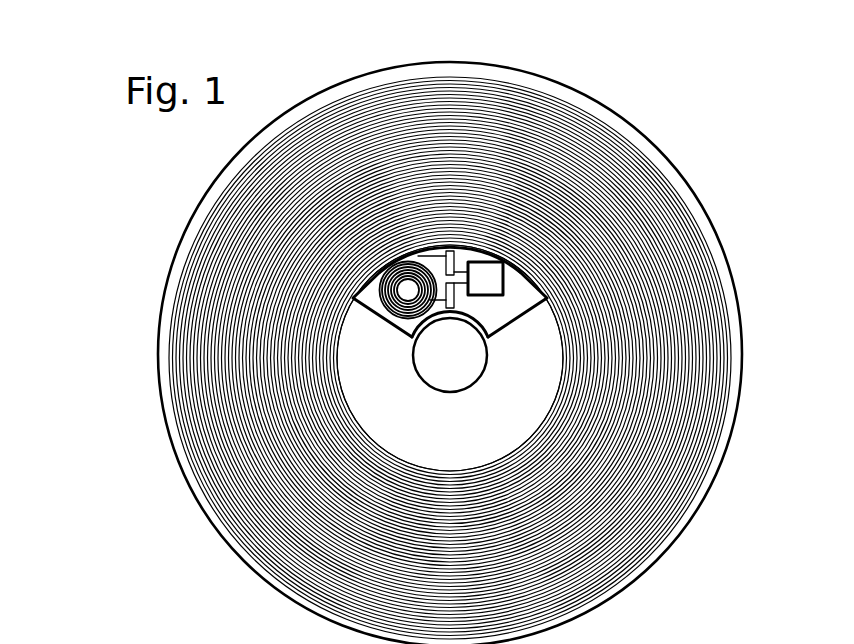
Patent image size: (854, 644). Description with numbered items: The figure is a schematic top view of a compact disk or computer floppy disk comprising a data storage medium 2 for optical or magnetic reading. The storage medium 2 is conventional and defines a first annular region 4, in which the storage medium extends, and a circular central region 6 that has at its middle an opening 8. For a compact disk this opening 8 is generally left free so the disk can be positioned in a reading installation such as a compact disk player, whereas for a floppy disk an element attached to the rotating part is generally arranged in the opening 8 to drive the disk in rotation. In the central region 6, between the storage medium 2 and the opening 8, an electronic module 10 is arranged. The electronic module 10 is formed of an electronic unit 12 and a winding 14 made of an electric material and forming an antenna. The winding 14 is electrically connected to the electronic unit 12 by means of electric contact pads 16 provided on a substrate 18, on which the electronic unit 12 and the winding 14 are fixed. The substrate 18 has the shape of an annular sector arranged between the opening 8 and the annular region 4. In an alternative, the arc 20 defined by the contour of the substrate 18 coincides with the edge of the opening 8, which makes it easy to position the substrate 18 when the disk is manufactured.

The data storage medium 2 is at (585, 225).
The first annular region 4 is at (162, 415).
The circular central region 6 is at (405, 445).
The opening 8 is at (424, 350).
The electronic module 10 is at (490, 322).
The electronic unit 12 is at (490, 273).
The winding 14 is at (383, 273).
The electric contact pads 16 is at (464, 250).
The substrate 18 is at (518, 295).
The arc 20 is at (450, 330).